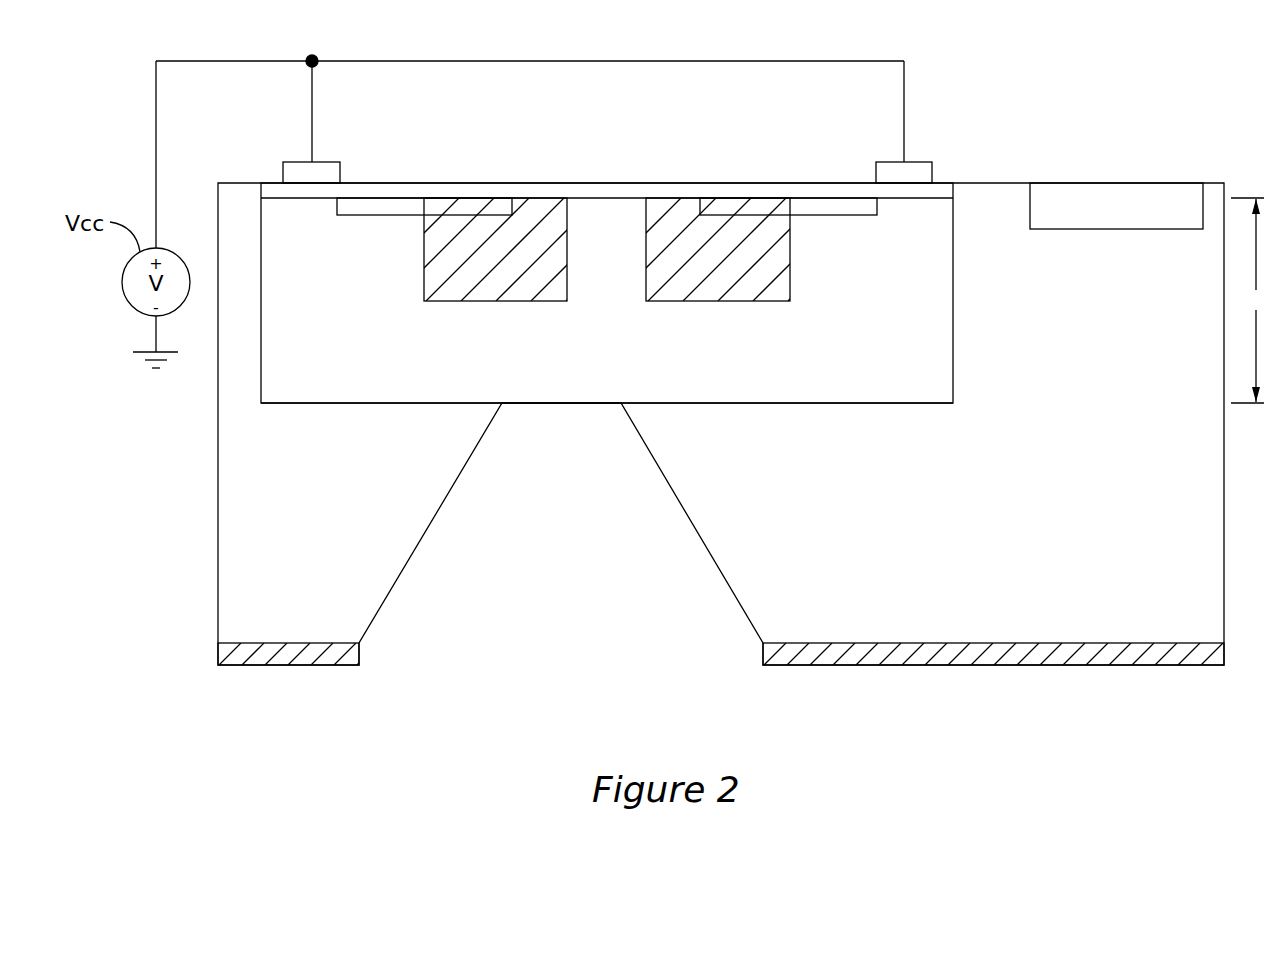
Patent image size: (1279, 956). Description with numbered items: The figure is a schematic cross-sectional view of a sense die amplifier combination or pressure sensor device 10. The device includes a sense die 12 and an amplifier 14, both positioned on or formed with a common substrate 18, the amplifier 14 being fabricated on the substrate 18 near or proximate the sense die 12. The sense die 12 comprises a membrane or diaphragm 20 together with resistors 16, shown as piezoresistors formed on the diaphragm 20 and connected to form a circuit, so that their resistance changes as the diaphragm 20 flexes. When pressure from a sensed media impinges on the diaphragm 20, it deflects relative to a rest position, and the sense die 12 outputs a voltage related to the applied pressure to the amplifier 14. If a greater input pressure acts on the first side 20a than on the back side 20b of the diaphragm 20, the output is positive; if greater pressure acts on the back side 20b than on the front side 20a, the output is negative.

The pressure sensor device 10 is at (1072, 58).
The sense die 12 is at (318, 438).
The amplifier 14 is at (1118, 198).
The resistors 16 is at (487, 302).
The substrate 18 is at (936, 630).
The diaphragm 20 is at (923, 370).
The first side of diaphragm 20a is at (593, 405).
The back side of diaphragm 20b is at (915, 198).